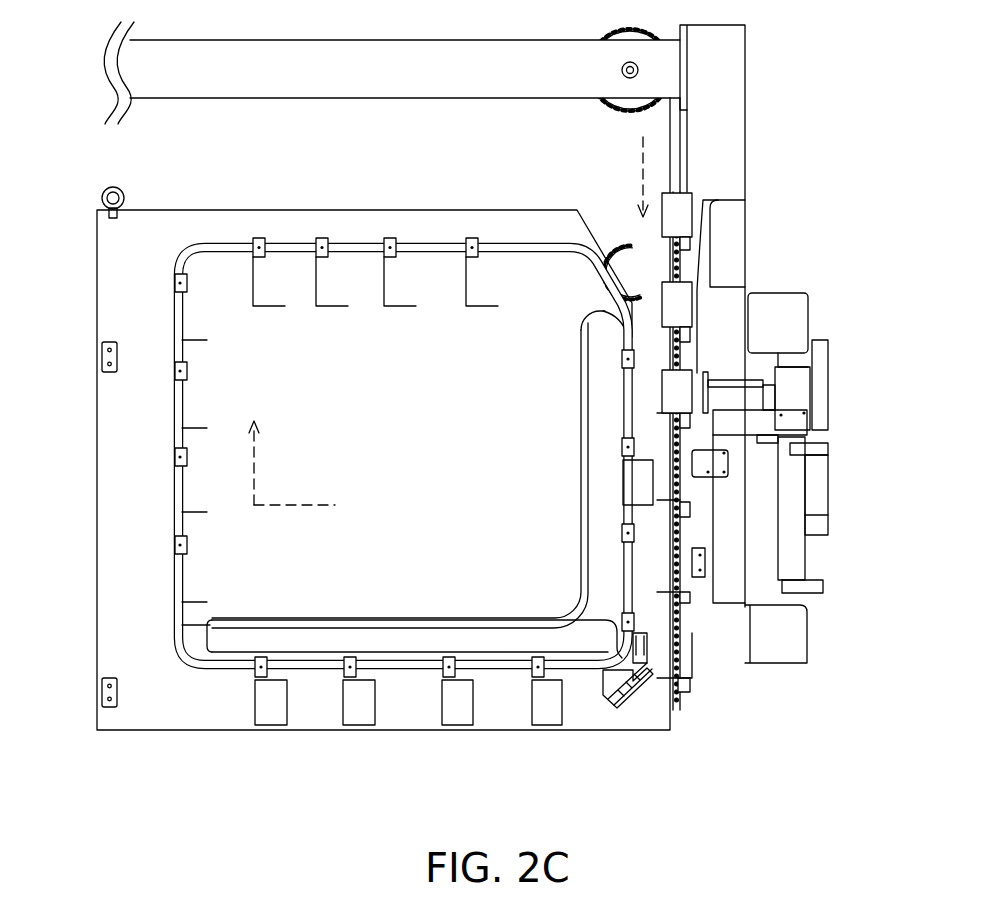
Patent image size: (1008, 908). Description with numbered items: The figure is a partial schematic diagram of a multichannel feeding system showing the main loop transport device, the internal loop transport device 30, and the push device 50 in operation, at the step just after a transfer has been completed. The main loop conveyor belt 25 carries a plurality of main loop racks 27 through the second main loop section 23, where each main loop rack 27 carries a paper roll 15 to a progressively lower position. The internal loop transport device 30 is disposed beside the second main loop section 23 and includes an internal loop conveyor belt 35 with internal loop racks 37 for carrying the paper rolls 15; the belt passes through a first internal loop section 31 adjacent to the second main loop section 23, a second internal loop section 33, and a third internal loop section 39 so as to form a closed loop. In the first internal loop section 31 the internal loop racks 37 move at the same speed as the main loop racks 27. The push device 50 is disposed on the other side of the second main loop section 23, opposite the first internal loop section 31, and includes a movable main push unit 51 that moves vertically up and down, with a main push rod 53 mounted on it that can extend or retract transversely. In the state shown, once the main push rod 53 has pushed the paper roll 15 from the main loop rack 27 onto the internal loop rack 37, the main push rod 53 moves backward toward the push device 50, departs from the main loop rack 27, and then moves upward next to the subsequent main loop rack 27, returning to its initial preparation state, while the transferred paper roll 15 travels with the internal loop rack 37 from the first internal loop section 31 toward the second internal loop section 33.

The paper roll 15 is at (667, 393).
The second main loop section 23 is at (683, 170).
The main loop conveyor belt 25 is at (678, 143).
The main loop rack 27 is at (695, 375).
The internal loop transport device 30 is at (370, 222).
The first internal loop section 31 is at (612, 524).
The second internal loop section 33 is at (397, 652).
The internal loop conveyor belt 35 is at (207, 247).
The internal loop rack 37 is at (398, 306).
The third internal loop section 39 is at (153, 490).
The push device 50 is at (800, 498).
The movable main push unit 51 is at (793, 408).
The main push rod 53 is at (708, 375).